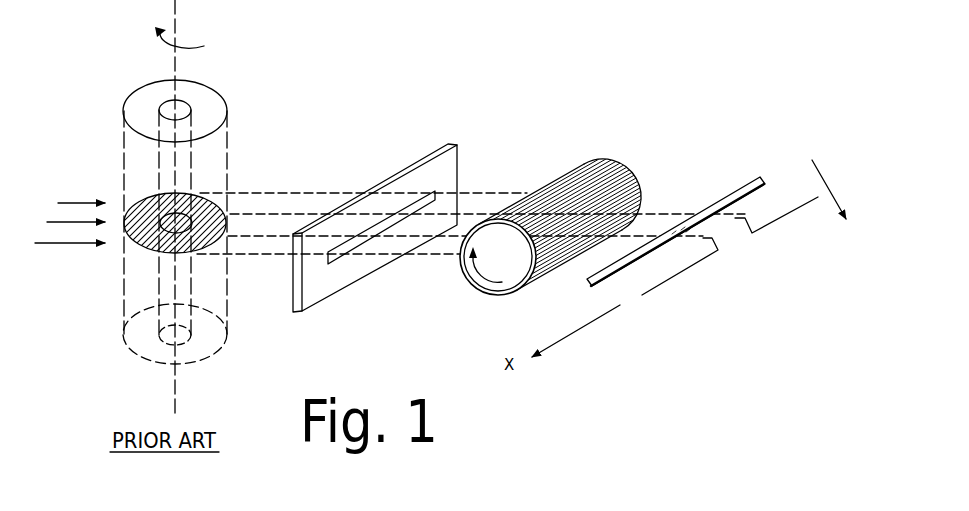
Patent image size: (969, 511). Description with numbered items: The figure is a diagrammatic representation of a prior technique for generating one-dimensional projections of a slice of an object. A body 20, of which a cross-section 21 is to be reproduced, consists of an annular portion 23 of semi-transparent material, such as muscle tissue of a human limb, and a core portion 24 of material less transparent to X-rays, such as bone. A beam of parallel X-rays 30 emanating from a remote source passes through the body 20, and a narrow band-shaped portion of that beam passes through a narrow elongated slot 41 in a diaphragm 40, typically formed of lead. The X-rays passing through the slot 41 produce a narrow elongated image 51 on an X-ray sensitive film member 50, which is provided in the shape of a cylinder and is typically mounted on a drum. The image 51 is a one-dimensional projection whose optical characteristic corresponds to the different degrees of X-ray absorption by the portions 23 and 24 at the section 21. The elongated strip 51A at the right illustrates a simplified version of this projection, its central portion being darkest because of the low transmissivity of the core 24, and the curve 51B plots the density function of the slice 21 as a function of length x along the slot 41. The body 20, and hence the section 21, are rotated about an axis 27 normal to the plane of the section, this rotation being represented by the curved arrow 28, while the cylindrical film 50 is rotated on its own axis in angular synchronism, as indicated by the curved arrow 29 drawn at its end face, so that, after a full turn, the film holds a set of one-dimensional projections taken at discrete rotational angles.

The body 20 is at (191, 208).
The cross-section 21 is at (143, 248).
The annular portion 23 is at (213, 107).
The core portion 24 is at (160, 110).
The axis 27 is at (177, 28).
The curved arrow 28 is at (150, 56).
The drum rotation direction 29 is at (473, 282).
The beam of parallel X-rays 30 is at (77, 203).
The diaphragm 40 is at (402, 213).
The slot 41 is at (407, 200).
The film member 50 is at (556, 227).
The image 51 is at (563, 173).
The elongated strip 51A is at (730, 192).
The curve 51B is at (788, 212).